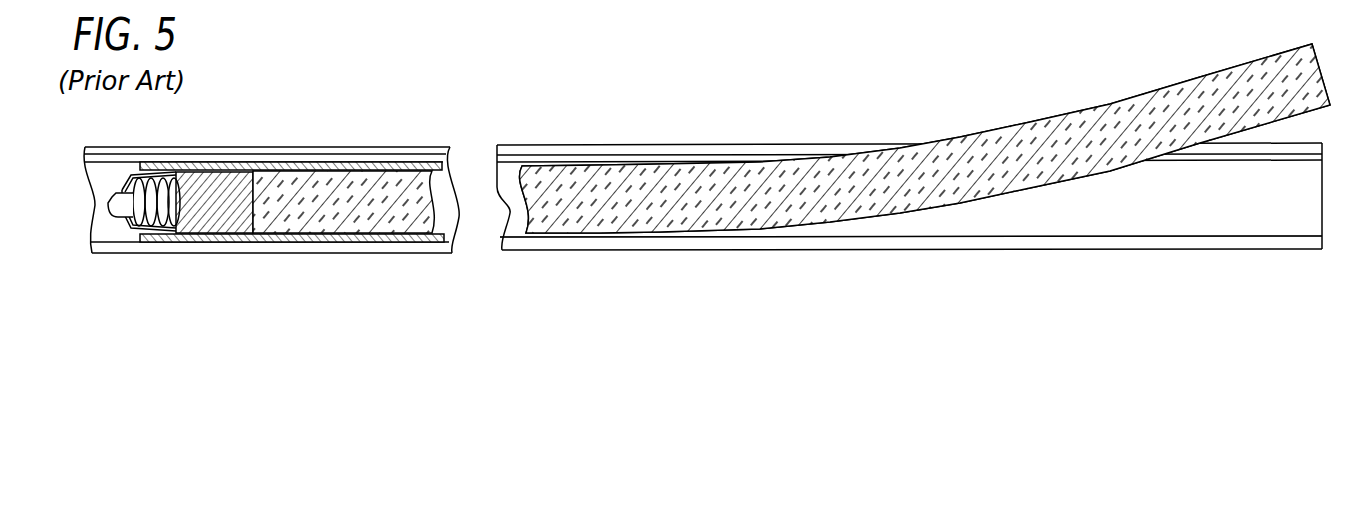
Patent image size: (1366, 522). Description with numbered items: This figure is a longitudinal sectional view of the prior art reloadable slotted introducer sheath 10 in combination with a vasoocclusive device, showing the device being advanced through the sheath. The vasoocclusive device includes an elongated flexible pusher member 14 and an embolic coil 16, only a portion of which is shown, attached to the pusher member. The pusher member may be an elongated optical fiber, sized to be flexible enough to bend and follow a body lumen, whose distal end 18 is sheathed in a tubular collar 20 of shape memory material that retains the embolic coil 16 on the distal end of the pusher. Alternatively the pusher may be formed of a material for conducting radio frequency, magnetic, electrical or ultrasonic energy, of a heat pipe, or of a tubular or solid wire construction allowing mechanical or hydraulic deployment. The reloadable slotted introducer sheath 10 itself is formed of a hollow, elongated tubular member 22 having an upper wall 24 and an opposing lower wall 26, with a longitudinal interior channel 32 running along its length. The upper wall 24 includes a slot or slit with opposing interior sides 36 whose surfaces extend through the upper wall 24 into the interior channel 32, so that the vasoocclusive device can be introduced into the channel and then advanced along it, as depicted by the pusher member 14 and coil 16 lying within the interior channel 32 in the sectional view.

The reloadable slotted introducer sheath 10 is at (370, 274).
The elongated flexible pusher member 14 is at (937, 160).
The embolic coil 16 is at (120, 204).
The distal end 18 is at (300, 197).
The tubular collar 20 is at (343, 170).
The elongated tubular member 22 is at (712, 148).
The upper wall 24 is at (767, 155).
The lower wall 26 is at (945, 248).
The longitudinal interior channel 32 is at (520, 222).
The interior sides 36 is at (598, 163).